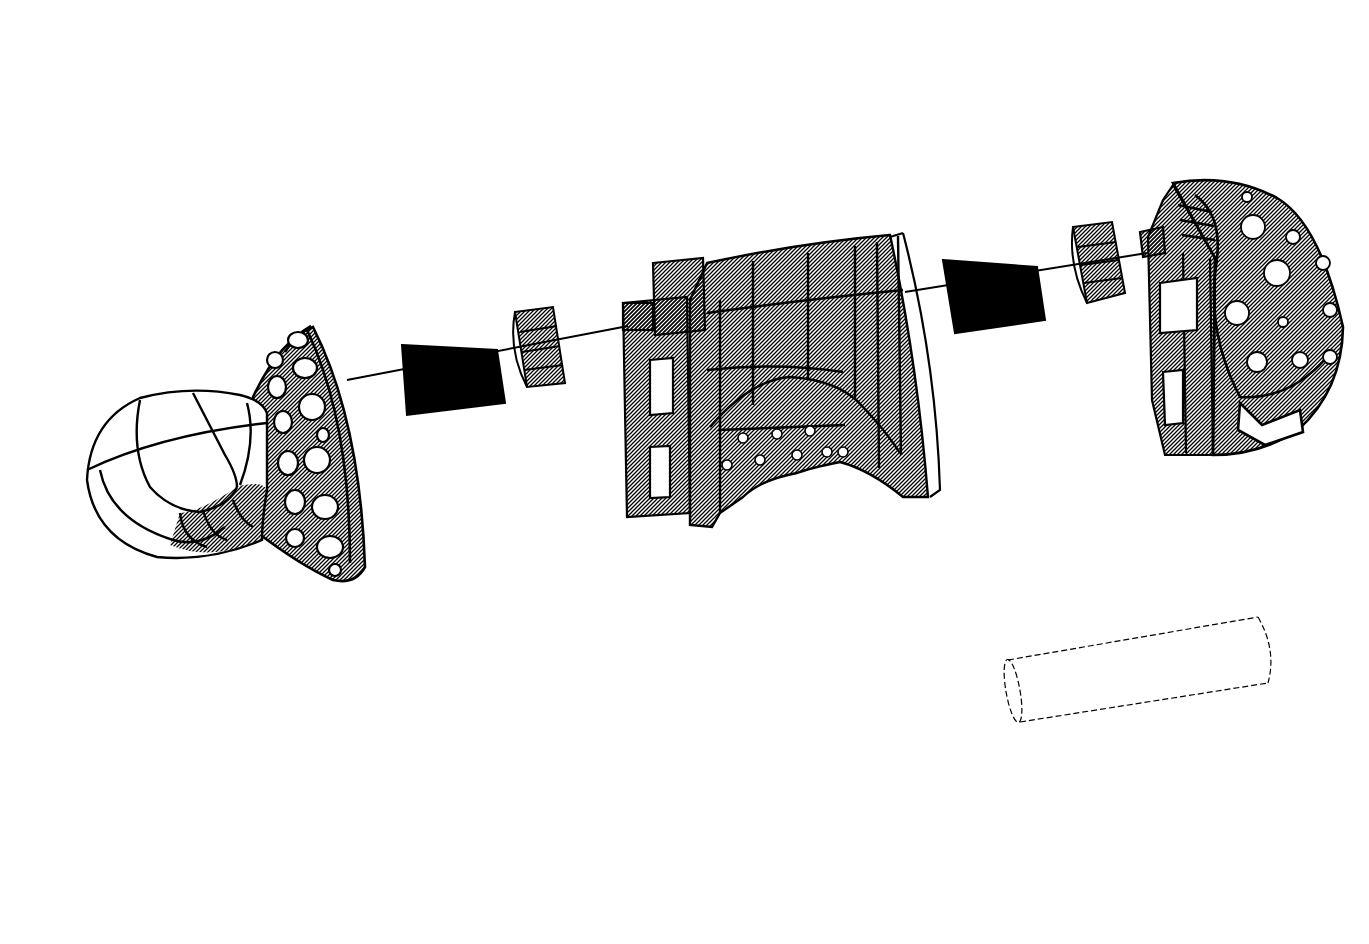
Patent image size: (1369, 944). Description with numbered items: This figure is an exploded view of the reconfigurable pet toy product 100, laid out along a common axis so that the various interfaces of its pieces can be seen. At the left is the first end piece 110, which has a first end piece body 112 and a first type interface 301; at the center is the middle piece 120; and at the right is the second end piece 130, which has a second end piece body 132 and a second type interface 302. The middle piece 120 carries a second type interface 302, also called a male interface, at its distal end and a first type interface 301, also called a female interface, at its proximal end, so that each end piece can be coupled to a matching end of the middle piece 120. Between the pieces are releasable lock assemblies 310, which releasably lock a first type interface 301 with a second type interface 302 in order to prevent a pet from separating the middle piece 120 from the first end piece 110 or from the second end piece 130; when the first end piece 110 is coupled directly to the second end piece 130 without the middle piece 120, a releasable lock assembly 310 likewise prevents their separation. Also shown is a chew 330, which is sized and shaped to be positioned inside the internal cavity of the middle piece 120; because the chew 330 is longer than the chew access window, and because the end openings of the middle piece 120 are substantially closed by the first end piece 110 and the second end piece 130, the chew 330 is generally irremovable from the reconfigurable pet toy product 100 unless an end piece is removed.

The reconfigurable pet toy product 100 is at (858, 81).
The first end piece 110 is at (306, 600).
The first end piece body 112 is at (270, 318).
The middle piece 120 is at (857, 530).
The second end piece 130 is at (1251, 481).
The second end piece body 132 is at (1227, 176).
The first type interface 301 is at (378, 508).
The second type interface 302 is at (632, 482).
The releasable lock assembly 310 is at (1069, 208).
The chew 330 is at (1136, 670).